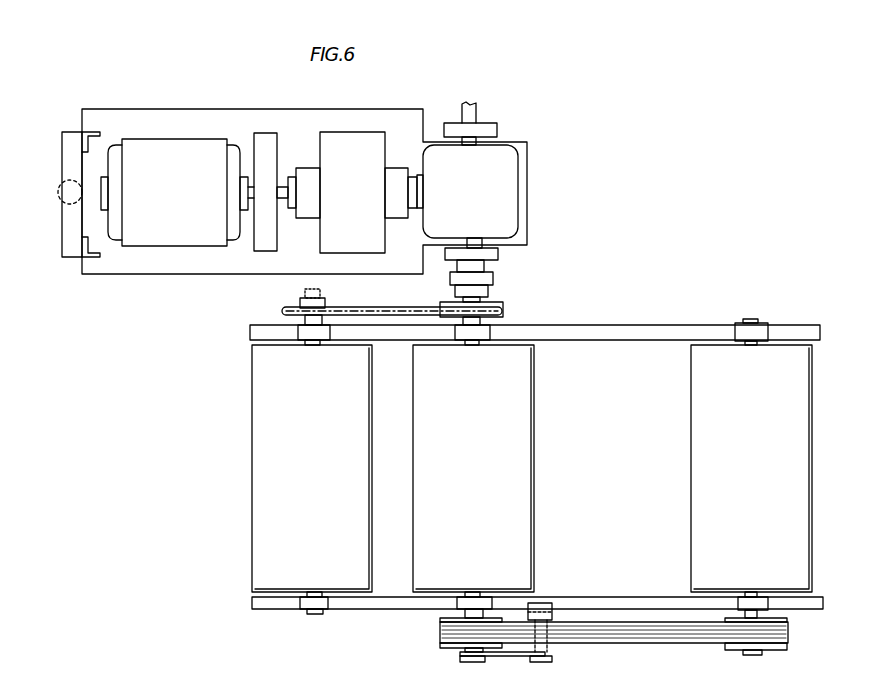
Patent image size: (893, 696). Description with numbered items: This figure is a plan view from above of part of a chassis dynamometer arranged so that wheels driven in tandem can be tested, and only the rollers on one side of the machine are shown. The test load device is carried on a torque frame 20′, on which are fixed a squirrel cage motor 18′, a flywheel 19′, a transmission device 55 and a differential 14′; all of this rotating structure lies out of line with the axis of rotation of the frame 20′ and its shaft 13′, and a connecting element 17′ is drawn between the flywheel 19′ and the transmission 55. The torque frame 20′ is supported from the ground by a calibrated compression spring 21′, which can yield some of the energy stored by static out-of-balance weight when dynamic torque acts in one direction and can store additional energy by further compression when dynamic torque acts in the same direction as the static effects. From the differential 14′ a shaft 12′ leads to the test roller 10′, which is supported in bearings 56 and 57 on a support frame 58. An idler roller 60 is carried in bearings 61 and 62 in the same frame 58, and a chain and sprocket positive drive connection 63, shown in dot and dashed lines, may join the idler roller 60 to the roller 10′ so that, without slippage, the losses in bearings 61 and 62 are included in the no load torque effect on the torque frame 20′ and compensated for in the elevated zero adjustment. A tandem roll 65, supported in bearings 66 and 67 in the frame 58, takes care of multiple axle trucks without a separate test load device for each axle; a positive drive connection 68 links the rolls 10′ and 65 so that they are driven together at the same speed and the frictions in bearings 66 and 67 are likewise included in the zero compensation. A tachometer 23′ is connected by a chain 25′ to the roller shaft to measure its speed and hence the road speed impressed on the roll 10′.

The torque frame 20′ is at (332, 115).
The calibrated compression spring 21′ is at (62, 186).
The squirrel cage motor 18′ is at (185, 200).
The flywheel 19′ is at (274, 143).
The shaft 17′ is at (284, 196).
The transmission device 55 is at (365, 196).
The differential 14′ is at (488, 196).
The shaft 13′ is at (478, 115).
The shaft 12′ is at (480, 298).
The chain and sprocket positive drive connection 63 is at (366, 308).
The bearing 61 is at (302, 330).
The bearing 56 is at (472, 333).
The support frame 58 is at (617, 325).
The bearing 66 is at (760, 329).
The tandem roll 65 is at (700, 410).
The idler roller 60 is at (258, 474).
The roller 10′ is at (530, 470).
The bearing 62 is at (310, 604).
The bearing 57 is at (470, 602).
The tachometer 23′ is at (540, 604).
The bearing 67 is at (760, 608).
The belt 68 is at (662, 644).
The chain 25′ is at (512, 662).